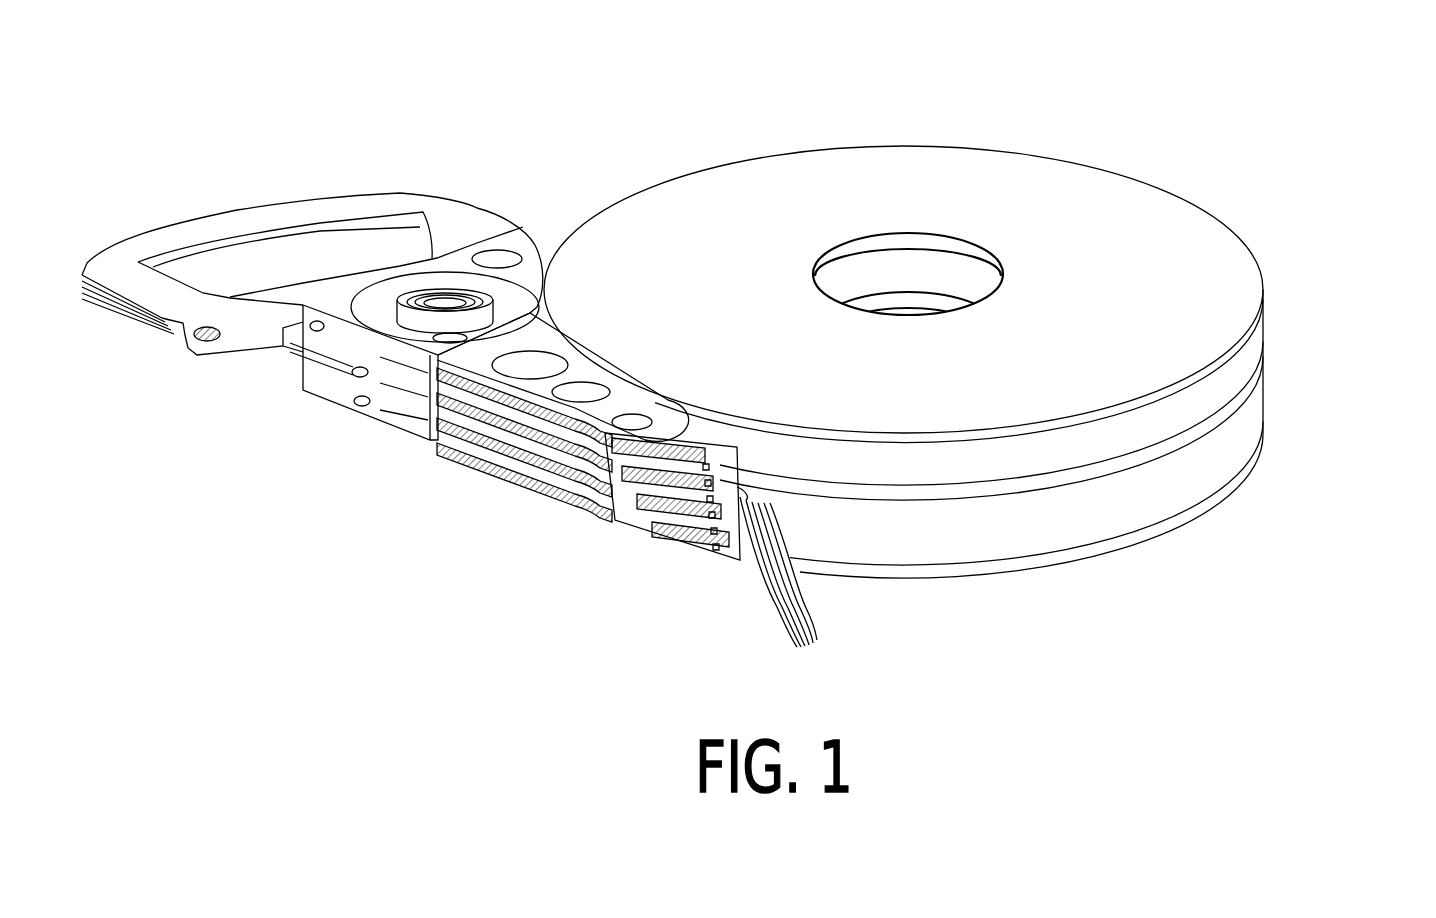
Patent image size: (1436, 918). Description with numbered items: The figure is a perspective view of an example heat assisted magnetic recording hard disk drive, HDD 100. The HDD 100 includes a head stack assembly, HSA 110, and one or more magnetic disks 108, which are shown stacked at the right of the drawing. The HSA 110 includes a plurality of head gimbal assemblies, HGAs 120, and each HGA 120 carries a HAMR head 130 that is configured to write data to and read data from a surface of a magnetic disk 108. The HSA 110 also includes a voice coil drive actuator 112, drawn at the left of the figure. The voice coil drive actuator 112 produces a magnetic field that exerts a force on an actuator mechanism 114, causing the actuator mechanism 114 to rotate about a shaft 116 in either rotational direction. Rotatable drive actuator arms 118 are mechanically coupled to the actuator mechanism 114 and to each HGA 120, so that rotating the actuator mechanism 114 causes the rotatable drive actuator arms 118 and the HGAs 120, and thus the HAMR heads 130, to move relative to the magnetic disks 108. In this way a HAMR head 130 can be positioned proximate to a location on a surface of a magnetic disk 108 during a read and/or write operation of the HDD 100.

The hard disk drive 100 is at (1264, 90).
The magnetic disk 108 is at (1080, 150).
The head stack assembly 110 is at (592, 572).
The voice coil drive actuator 112 is at (243, 203).
The actuator mechanism 114 is at (532, 222).
The shaft 116 is at (452, 305).
The rotatable drive actuator arm 118 is at (480, 417).
The head gimbal assembly 120 is at (727, 453).
The HAMR head 130 is at (807, 573).